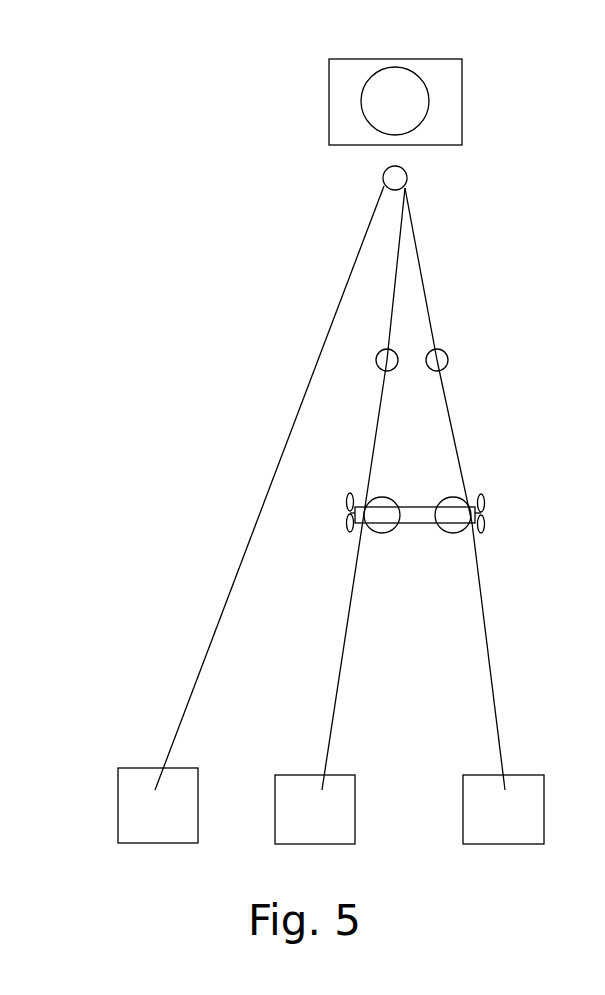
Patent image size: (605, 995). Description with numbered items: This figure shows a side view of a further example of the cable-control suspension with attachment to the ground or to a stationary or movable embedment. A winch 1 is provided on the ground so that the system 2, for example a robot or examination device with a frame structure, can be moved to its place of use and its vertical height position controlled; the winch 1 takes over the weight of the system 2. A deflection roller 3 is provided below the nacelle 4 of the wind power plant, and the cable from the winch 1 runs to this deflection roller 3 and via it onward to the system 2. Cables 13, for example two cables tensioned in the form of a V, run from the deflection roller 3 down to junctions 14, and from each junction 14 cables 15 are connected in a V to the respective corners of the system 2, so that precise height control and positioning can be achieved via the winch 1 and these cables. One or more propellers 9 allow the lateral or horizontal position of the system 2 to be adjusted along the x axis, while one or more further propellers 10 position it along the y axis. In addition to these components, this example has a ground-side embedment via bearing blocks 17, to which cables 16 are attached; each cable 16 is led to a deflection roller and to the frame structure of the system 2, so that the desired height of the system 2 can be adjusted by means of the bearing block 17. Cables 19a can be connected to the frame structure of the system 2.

The winch 1 is at (155, 846).
The system 2 is at (405, 526).
The deflection roller 3 is at (412, 177).
The nacelle 4 is at (466, 99).
The propeller 9 is at (488, 511).
The further propeller 10 is at (460, 536).
The cables 13 is at (393, 282).
The junction 14 is at (377, 352).
The cables 15 is at (373, 455).
The cables 16 is at (337, 705).
The bearing block 17 is at (358, 797).
The cables 19a is at (361, 530).